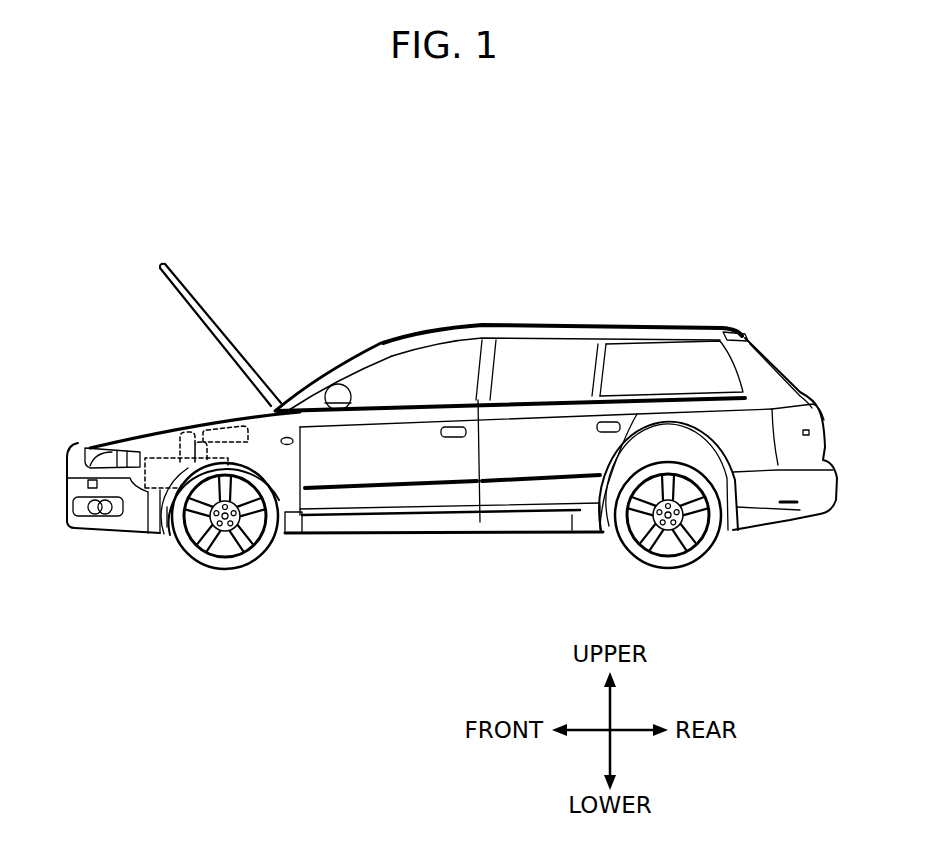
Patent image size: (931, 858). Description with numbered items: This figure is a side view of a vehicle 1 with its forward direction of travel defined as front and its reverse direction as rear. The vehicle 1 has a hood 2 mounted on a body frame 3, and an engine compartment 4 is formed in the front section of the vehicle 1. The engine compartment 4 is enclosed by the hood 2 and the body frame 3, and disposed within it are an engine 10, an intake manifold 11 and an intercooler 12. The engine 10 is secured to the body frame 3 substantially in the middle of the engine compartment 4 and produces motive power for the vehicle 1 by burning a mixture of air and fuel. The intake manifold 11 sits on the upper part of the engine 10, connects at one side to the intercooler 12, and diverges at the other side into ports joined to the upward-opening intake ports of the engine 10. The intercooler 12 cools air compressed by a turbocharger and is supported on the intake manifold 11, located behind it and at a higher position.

The vehicle 1 is at (84, 162).
The hood 2 is at (170, 268).
The body frame 3 is at (396, 340).
The engine compartment 4 is at (262, 462).
The engine 10 is at (180, 490).
The intake manifold 11 is at (180, 432).
The intercooler 12 is at (230, 428).